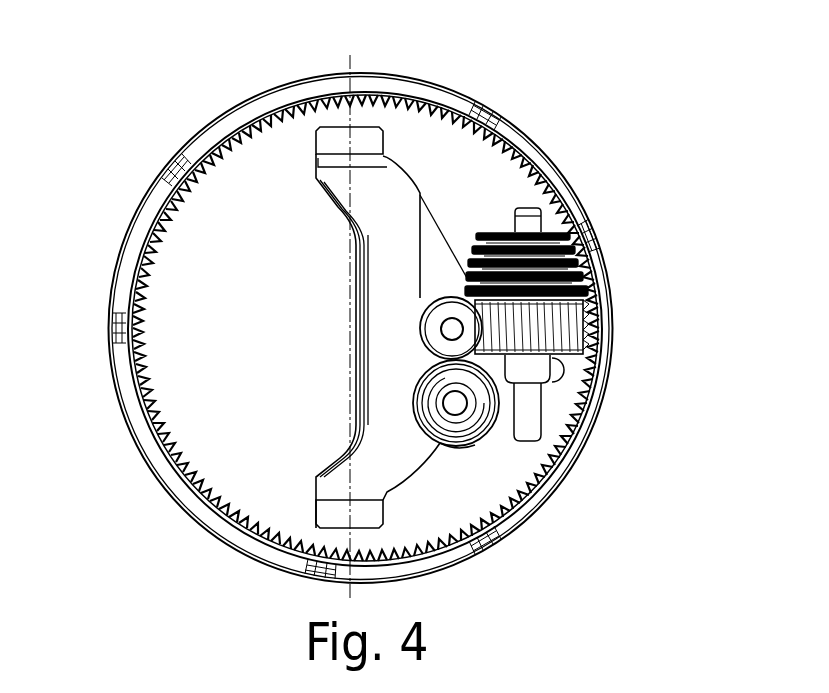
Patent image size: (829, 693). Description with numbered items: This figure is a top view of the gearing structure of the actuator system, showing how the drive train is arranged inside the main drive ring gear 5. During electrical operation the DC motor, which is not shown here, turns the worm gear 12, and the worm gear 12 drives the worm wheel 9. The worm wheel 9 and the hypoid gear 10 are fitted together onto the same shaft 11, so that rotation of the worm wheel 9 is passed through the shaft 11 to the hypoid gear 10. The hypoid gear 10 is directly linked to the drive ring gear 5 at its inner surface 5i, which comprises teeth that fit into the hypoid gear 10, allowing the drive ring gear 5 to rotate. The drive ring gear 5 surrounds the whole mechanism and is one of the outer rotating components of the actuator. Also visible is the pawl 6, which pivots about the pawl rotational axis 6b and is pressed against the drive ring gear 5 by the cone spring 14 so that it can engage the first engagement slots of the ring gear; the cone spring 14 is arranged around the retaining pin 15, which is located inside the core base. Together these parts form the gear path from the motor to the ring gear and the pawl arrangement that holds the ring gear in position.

The drive ring gear 5 is at (107, 386).
The inner surface of the drive ring gear 5i is at (158, 267).
The pawl 6 is at (373, 203).
The pawl rotational axis 6b is at (348, 317).
The worm wheel 9 is at (557, 323).
The hypoid gear 10 is at (590, 239).
The shaft 11 is at (528, 418).
The worm gear 12 is at (425, 322).
The cone spring 14 is at (465, 444).
The retaining pin 15 is at (456, 403).